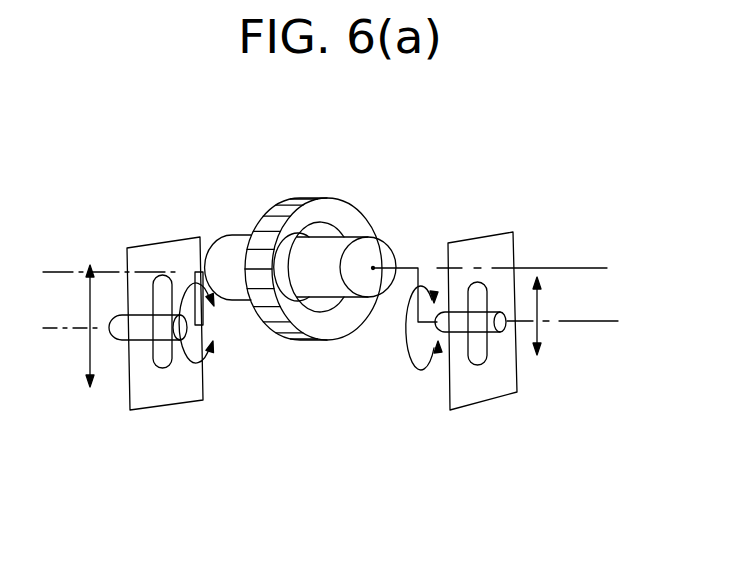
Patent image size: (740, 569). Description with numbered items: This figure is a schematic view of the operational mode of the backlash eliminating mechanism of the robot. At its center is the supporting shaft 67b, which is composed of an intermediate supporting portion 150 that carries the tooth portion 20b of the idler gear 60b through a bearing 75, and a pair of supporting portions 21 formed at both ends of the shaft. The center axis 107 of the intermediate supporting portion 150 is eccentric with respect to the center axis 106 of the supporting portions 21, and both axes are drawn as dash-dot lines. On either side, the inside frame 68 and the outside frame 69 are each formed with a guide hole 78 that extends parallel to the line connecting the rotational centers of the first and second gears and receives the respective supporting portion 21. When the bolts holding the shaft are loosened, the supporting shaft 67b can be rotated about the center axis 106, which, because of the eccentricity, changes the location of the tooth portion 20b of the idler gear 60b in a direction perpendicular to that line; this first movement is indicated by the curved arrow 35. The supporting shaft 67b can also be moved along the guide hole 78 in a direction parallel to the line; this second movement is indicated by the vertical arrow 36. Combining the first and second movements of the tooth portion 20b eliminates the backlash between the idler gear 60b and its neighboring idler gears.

The tooth portion 20b is at (328, 328).
The supporting portions 21 is at (120, 340).
The arrow 35 is at (213, 353).
The arrow 36 is at (102, 367).
The idler gear 60b is at (331, 275).
The supporting shaft 67b is at (372, 295).
The inside frame 68 is at (170, 248).
The outside frame 69 is at (507, 235).
The bearing 75 is at (312, 225).
The guide hole 78 is at (170, 363).
The center axis 106 is at (603, 321).
The center axis 107 is at (583, 267).
The intermediate supporting portion 150 is at (373, 268).